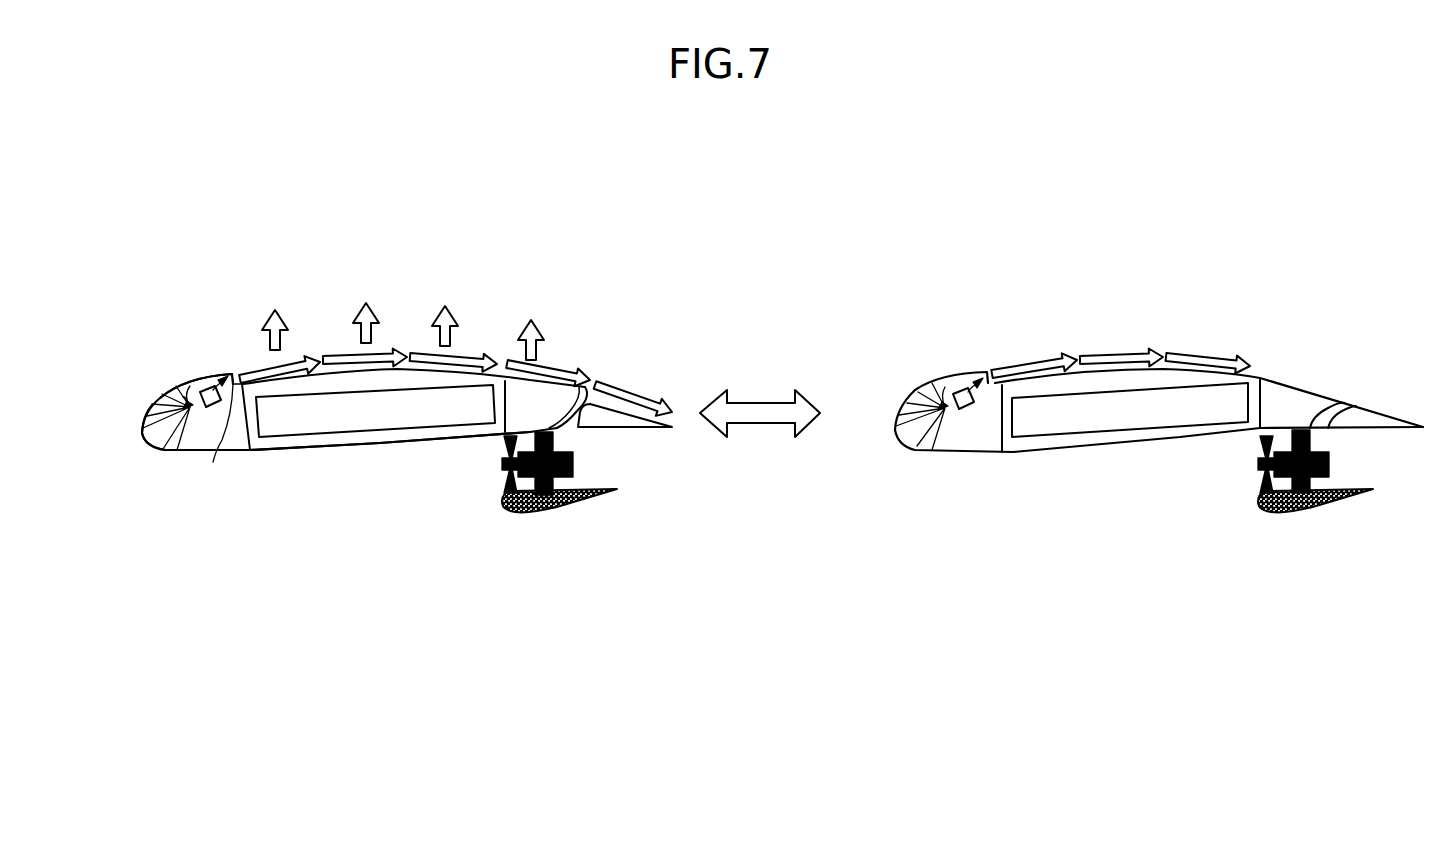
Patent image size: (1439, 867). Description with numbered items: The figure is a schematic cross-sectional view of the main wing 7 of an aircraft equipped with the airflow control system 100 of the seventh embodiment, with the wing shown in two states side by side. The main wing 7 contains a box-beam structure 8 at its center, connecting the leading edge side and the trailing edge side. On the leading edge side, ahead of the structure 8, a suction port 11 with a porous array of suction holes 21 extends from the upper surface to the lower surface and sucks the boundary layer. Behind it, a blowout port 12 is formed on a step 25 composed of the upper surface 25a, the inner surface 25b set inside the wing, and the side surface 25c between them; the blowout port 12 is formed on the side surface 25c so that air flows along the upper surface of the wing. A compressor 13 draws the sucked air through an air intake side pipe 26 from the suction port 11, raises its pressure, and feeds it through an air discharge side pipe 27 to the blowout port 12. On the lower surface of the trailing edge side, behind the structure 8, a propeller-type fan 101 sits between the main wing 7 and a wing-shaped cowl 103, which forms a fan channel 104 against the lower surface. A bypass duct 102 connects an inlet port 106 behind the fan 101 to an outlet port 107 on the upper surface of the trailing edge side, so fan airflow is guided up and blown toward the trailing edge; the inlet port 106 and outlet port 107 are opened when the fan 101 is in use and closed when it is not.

The main wing 7 is at (555, 210).
The structure 8 is at (350, 440).
The suction port 11 is at (118, 399).
The blowout port 12 is at (232, 373).
The compressor 13 is at (186, 403).
The suction holes 21 is at (143, 437).
The step 25 is at (201, 375).
The upper surface 25a is at (213, 366).
The inner surface 25b is at (263, 373).
The side surface 25c is at (250, 450).
The air intake side pipe 26 is at (178, 450).
The air discharge side pipe 27 is at (218, 441).
The airflow control system 100 is at (623, 300).
The fan 101 is at (499, 477).
The bypass duct 102 is at (593, 387).
The cowl 103 is at (540, 513).
The fan channel 104 is at (585, 467).
The inlet port 106 is at (566, 432).
The outlet port 107 is at (615, 402).